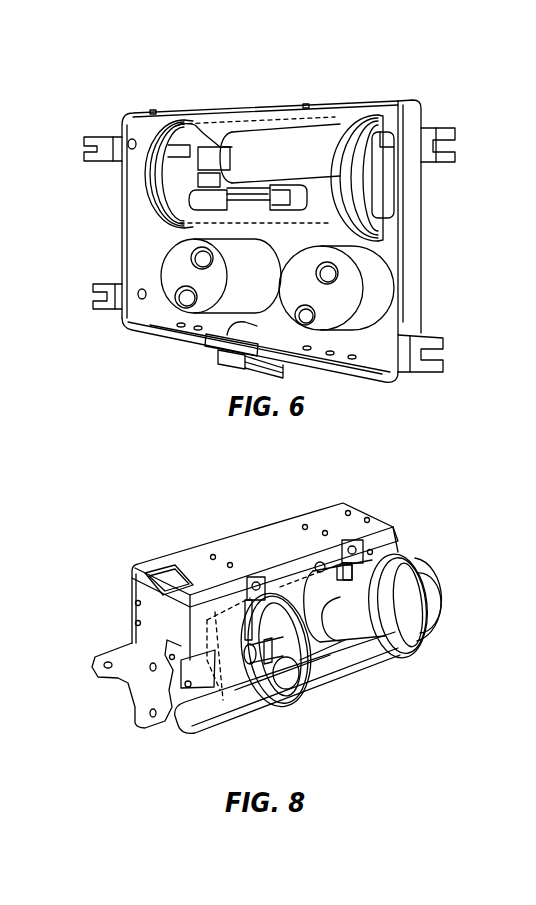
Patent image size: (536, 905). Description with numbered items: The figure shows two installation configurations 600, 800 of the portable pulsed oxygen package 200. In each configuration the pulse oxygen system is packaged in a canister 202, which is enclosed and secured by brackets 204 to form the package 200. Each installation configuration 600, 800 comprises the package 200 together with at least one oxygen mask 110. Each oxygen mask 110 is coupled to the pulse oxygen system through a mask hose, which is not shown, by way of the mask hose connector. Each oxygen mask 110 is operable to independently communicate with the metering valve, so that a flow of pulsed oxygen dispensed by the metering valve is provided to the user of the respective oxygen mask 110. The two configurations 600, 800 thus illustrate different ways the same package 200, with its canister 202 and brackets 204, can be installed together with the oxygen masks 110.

In FIG. 6, the installation configuration 600 is at (73, 113).
In FIG. 8, the installation configuration 800 is at (481, 546).
In FIG. 6, the portable pulsed oxygen package 200 is at (277, 135).
In FIG. 8, the portable pulsed oxygen package 200 is at (350, 631).
In FIG. 6, the canister 202 is at (295, 224).
In FIG. 8, the canister 202 is at (225, 628).
In FIG. 6, the brackets 204 is at (151, 131).
In FIG. 8, the brackets 204 is at (291, 597).
In FIG. 6, the oxygen mask 110 is at (180, 277).